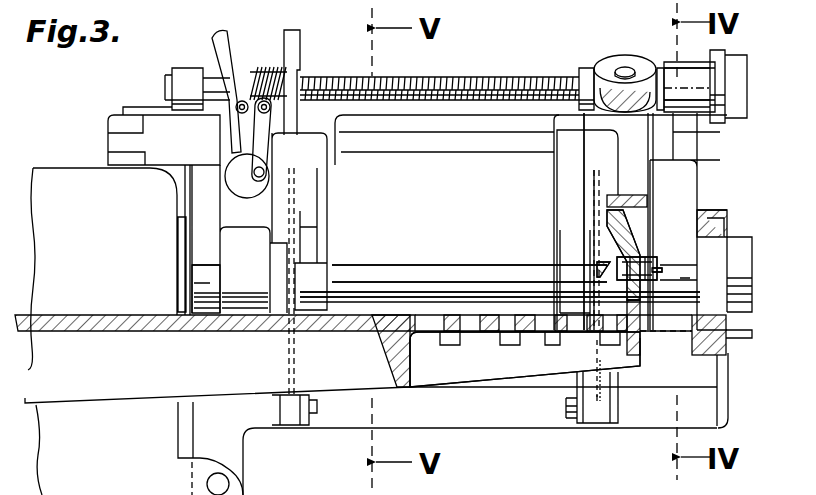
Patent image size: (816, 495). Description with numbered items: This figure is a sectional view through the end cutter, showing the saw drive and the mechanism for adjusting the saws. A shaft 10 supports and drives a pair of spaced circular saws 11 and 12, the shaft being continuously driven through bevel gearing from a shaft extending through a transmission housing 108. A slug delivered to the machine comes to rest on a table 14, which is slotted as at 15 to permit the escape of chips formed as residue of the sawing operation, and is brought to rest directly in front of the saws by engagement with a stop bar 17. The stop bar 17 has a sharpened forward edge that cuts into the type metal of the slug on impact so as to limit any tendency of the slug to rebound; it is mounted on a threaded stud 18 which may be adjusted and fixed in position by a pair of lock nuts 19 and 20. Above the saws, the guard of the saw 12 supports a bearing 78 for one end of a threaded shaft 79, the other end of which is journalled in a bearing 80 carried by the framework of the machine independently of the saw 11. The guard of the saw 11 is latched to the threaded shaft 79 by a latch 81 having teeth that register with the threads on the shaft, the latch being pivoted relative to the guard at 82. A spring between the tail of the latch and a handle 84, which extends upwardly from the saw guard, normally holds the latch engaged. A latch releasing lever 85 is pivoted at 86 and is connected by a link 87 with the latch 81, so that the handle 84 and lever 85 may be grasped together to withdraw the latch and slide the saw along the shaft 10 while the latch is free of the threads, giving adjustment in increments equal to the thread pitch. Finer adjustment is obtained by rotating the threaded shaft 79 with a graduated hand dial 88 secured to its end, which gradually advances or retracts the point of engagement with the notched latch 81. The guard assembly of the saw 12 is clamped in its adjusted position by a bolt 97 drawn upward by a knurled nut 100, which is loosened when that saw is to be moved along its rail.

The shaft 10 is at (460, 272).
The circular saw 11 is at (272, 212).
The circular saw 12 is at (596, 172).
The table 14 is at (406, 318).
The slot 15 is at (542, 354).
The stop bar 17 is at (605, 270).
The threaded stud 18 is at (660, 276).
The lock nut 19 is at (620, 250).
The lock nut 20 is at (652, 258).
The bearing 78 is at (662, 64).
The threaded shaft 79 is at (517, 64).
The bearing 80 is at (190, 72).
The latch 81 is at (288, 107).
The pivot 82 is at (236, 110).
The handle 84 is at (290, 47).
The latch releasing lever 85 is at (222, 32).
The pivot 86 is at (238, 182).
The link 87 is at (257, 136).
The graduated hand dial 88 is at (738, 55).
The bolt 97 is at (626, 70).
The knurled nut 100 is at (638, 62).
The transmission housing 108 is at (118, 244).